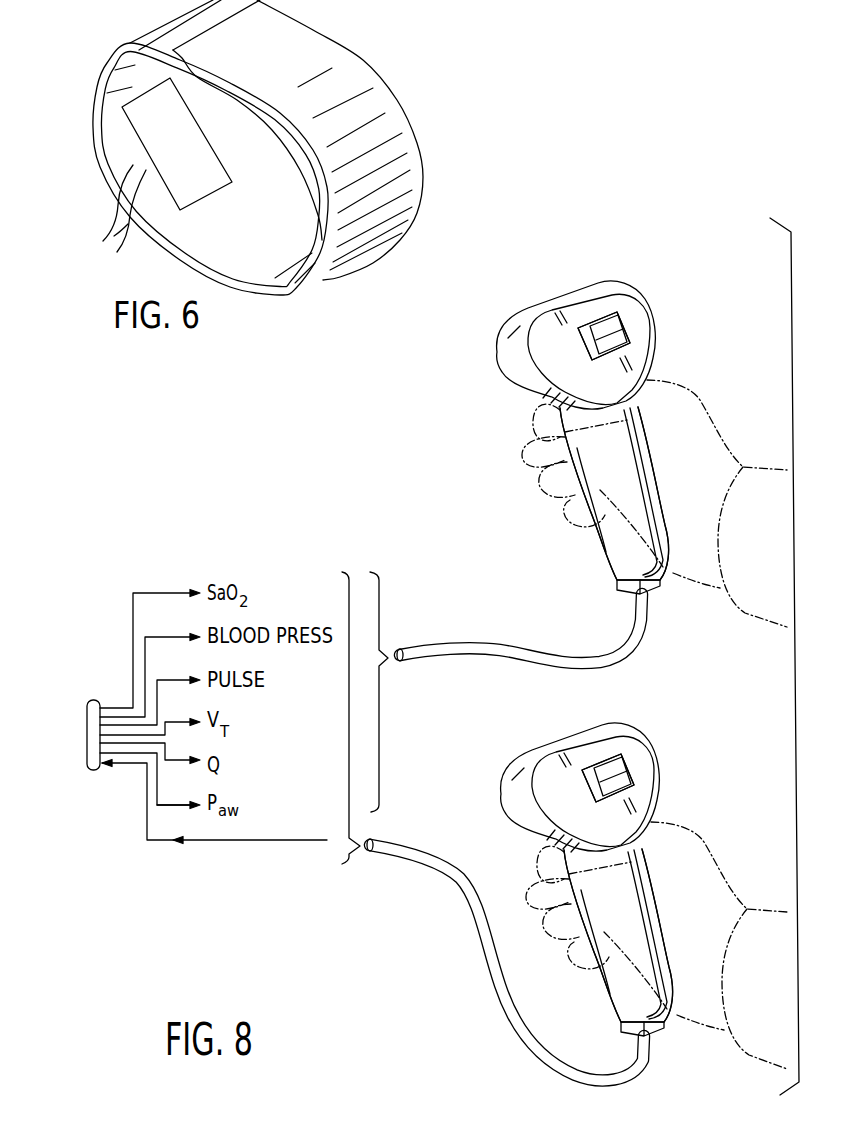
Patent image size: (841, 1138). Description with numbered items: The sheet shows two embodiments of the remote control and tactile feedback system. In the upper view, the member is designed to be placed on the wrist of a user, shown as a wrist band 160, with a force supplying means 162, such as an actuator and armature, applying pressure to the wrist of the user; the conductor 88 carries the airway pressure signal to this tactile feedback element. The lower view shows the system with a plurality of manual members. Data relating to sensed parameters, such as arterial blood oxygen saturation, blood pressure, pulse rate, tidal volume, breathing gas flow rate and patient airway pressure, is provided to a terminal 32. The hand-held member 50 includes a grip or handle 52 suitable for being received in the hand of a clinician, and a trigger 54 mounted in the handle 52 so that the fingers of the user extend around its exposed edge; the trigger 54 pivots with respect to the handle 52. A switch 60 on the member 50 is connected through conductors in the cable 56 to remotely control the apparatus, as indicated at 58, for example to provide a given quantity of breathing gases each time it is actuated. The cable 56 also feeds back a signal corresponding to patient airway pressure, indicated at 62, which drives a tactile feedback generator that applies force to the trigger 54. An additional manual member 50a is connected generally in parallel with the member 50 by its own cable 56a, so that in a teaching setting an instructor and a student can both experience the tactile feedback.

In FIG. 6, the wrist-mounted member 160 is at (385, 97).
In FIG. 6, the force supplying means 162 is at (196, 146).
In FIG. 6, the conductor 88 is at (134, 228).
In FIG. 8, the terminal 32 is at (92, 770).
In FIG. 8, the remote control connection 58 is at (150, 843).
In FIG. 8, the fed-back parameter 62 is at (183, 806).
In FIG. 8, the cable 56a is at (477, 643).
In FIG. 8, the cable 56 is at (517, 1033).
In FIG. 8, the additional manual member 50a is at (617, 274).
In FIG. 8, the member 50 is at (621, 716).
In FIG. 8, the switch 60 is at (608, 327).
In FIG. 8, the handle 52 is at (617, 562).
In FIG. 8, the trigger 54 is at (580, 513).